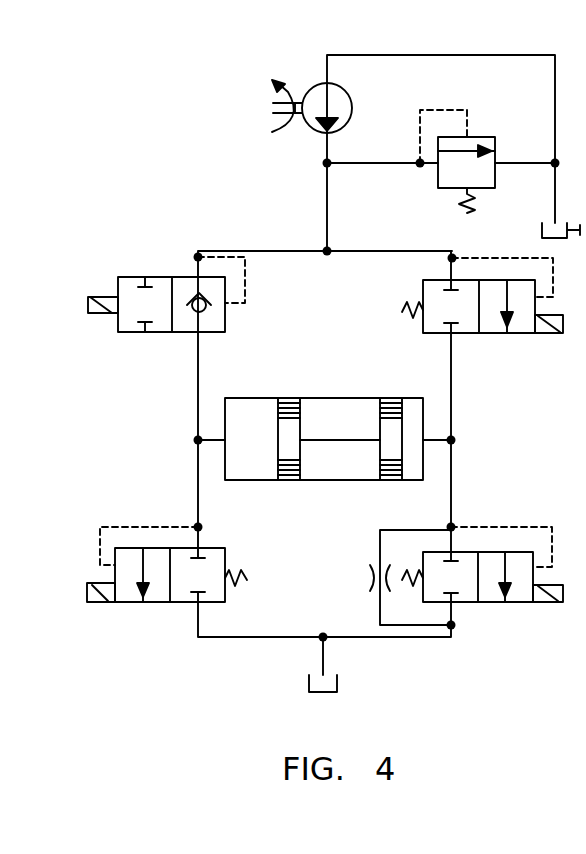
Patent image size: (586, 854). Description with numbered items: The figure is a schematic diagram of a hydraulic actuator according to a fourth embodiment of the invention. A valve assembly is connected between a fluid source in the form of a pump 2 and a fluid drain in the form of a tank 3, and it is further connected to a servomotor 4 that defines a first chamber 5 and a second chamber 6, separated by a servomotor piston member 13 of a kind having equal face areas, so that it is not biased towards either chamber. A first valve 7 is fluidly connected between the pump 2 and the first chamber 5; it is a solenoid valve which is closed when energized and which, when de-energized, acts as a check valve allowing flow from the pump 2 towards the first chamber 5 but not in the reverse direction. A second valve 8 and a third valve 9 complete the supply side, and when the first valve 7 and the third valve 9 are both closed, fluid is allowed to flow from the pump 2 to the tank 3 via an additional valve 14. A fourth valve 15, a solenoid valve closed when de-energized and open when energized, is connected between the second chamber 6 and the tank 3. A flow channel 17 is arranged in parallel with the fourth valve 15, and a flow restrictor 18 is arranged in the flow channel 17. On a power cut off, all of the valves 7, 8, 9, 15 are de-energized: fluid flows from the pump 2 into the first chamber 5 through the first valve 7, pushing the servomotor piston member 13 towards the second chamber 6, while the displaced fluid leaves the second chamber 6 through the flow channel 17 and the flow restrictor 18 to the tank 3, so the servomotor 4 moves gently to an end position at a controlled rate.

The pump 2 is at (312, 87).
The tank 3 is at (333, 693).
The servomotor 4 is at (347, 465).
The first chamber 5 is at (248, 470).
The second chamber 6 is at (417, 447).
The first valve 7 is at (162, 278).
The second valve 8 is at (115, 578).
The third valve 9 is at (497, 335).
The servomotor piston member 13 is at (332, 441).
The additional valve 14 is at (488, 137).
The fourth valve 15 is at (485, 603).
The flow channel 17 is at (413, 626).
The flow restrictor 18 is at (371, 582).